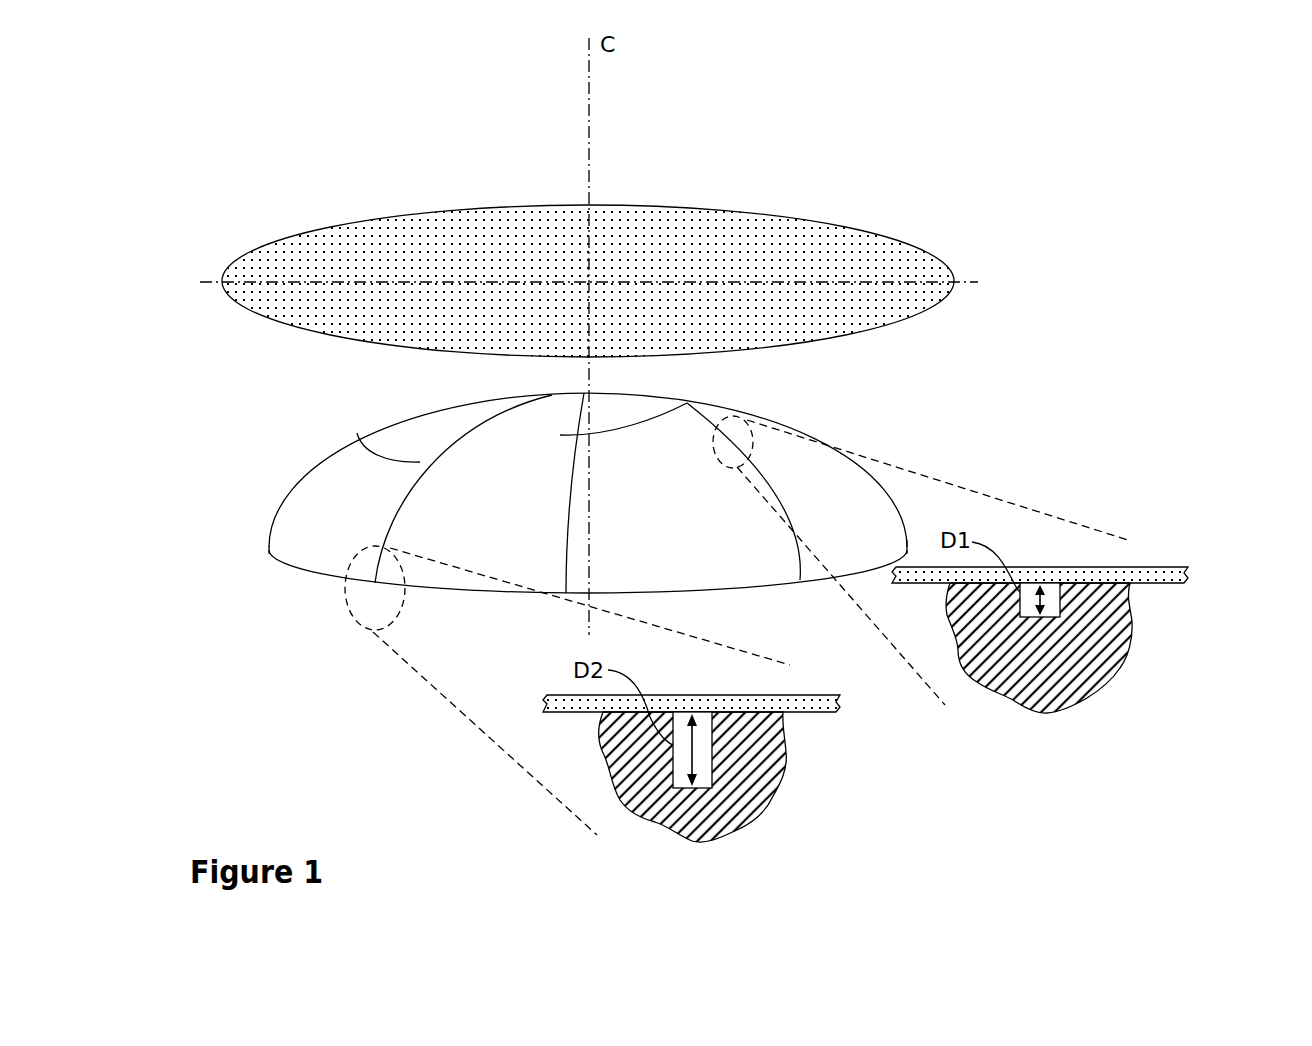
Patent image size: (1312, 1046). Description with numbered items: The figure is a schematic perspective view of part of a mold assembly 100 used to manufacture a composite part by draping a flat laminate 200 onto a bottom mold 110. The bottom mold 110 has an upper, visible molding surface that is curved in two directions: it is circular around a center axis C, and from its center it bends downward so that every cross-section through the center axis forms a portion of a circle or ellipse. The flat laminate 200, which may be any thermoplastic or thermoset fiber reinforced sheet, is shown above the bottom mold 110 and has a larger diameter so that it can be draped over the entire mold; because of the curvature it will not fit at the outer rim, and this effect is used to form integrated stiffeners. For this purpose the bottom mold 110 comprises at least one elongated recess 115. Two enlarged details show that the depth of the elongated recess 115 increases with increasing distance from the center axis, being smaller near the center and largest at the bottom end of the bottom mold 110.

The mold assembly 100 is at (1018, 412).
The bottom mold 110 is at (320, 524).
The elongated recess 115 is at (687, 403).
The flat laminate 200 is at (917, 238).